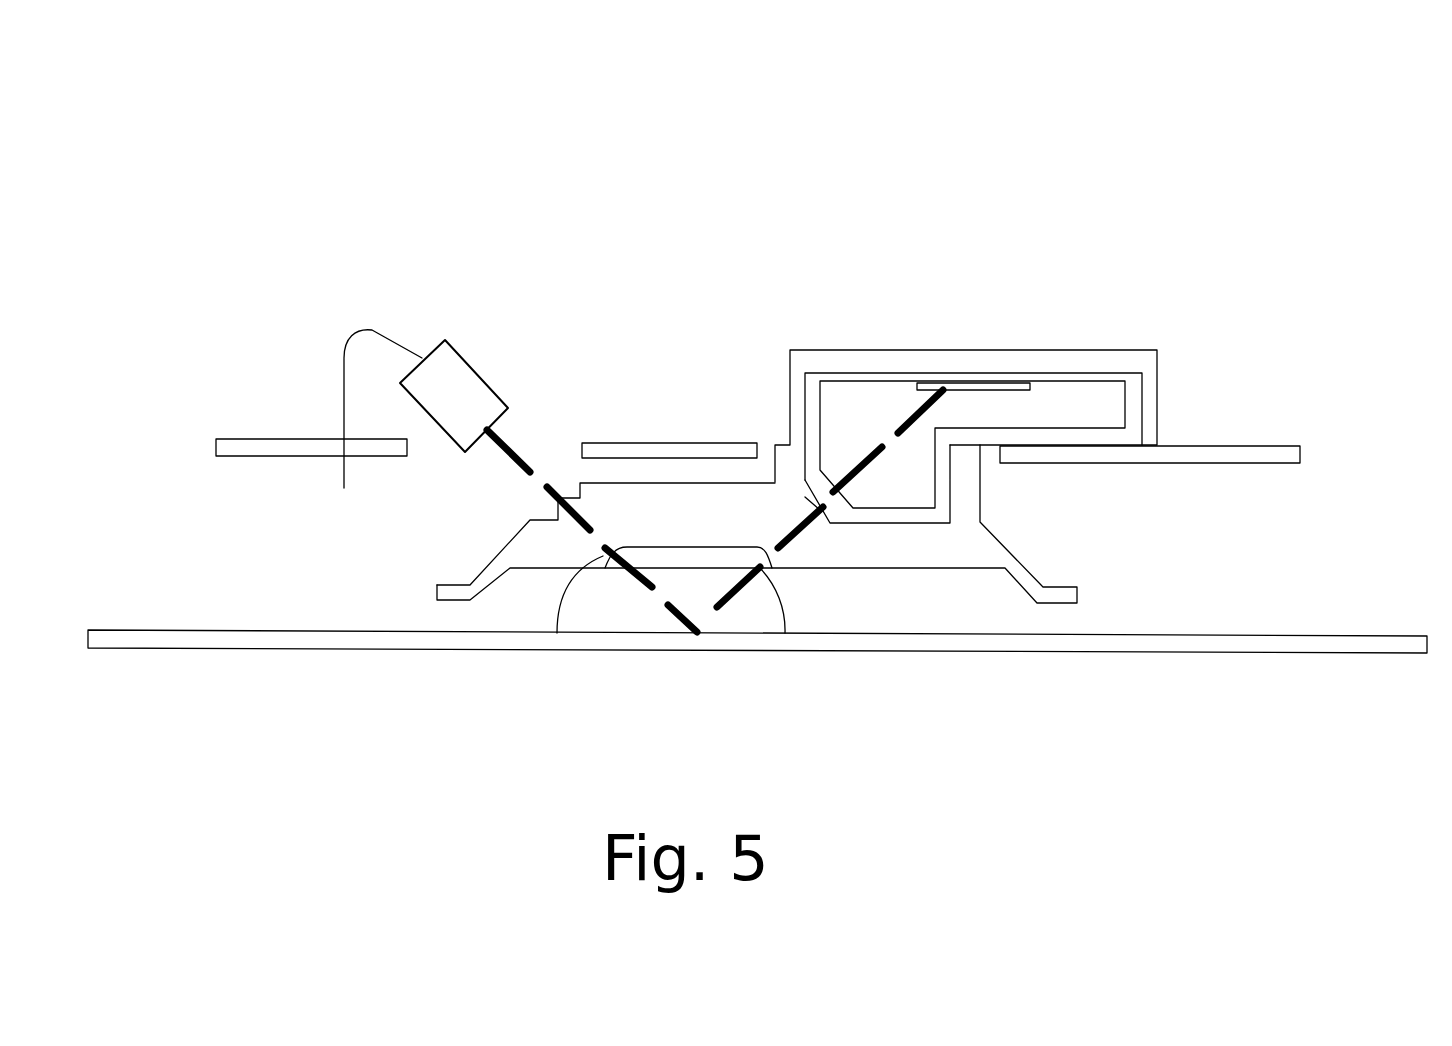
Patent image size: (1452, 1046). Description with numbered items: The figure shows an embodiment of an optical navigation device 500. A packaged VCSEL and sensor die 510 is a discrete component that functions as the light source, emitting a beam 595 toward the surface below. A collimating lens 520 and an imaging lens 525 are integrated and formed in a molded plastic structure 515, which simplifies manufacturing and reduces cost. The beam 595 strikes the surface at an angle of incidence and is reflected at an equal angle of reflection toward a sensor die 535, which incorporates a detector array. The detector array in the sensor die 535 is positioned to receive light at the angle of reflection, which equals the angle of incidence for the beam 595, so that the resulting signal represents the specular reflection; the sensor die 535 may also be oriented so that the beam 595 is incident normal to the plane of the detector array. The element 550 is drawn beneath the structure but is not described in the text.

The optical navigation device 500 is at (708, 215).
The packaged VCSEL and sensor die 510 is at (457, 388).
The molded plastic structure 515 is at (938, 548).
The collimating lens 520 is at (583, 542).
The imaging lens 525 is at (793, 550).
The sensor die 535 is at (992, 395).
The base plate / substrate 550 is at (1330, 630).
The beam 595 is at (520, 454).